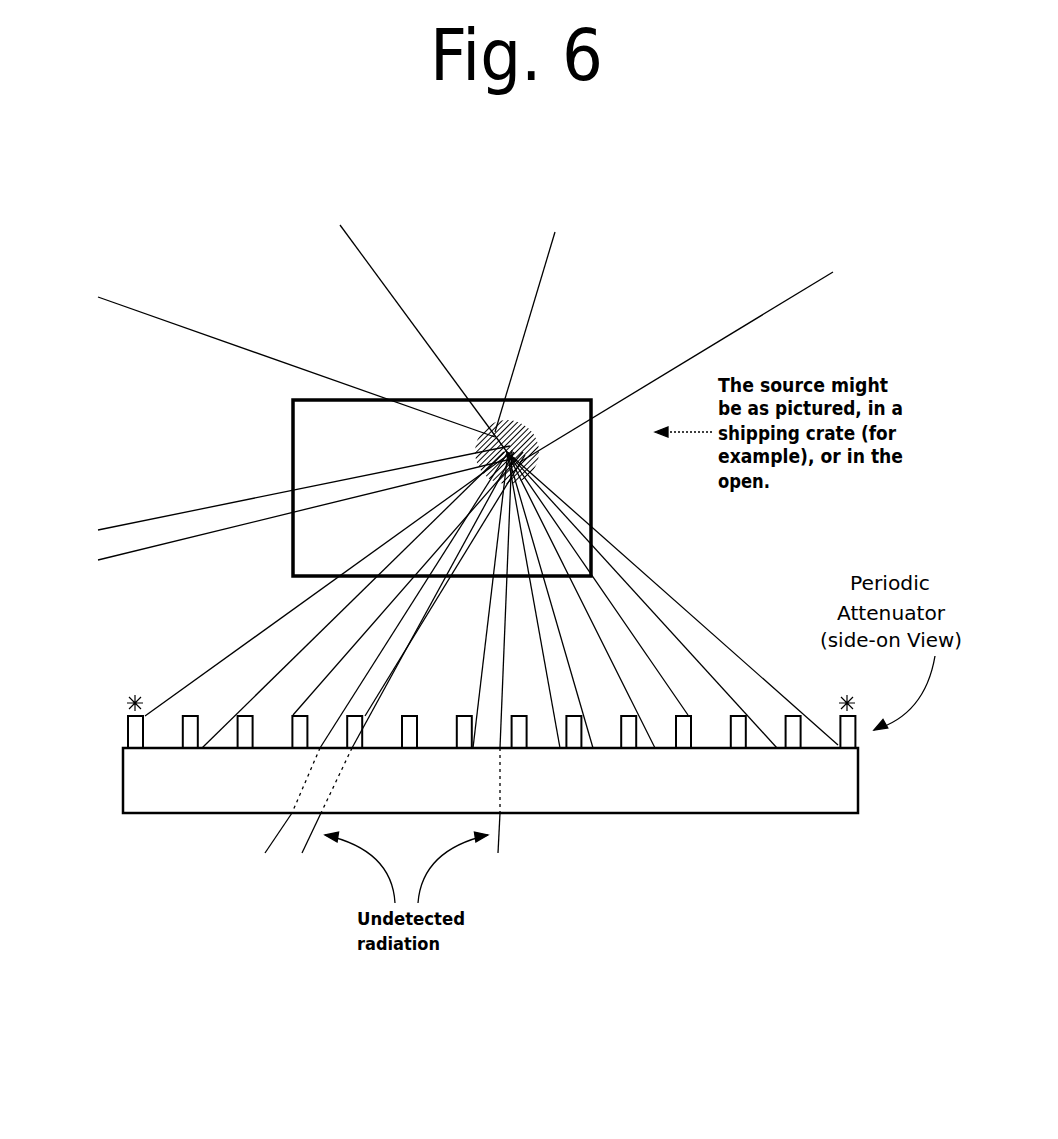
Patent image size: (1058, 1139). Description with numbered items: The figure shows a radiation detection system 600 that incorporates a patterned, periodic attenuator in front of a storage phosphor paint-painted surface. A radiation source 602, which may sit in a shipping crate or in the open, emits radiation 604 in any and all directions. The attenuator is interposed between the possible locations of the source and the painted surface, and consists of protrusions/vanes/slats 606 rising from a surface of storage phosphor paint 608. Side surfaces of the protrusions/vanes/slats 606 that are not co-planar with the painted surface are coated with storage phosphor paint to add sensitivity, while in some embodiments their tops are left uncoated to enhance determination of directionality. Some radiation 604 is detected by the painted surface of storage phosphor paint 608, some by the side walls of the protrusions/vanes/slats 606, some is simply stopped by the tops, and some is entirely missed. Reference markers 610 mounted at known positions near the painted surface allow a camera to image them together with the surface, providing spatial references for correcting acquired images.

The radiation detection system 600 is at (170, 217).
The radiation source 602 is at (538, 432).
The radiation 604 is at (700, 595).
The protrusions/vanes/slats 606 is at (243, 708).
The painted surface of storage phosphor paint 608 is at (647, 820).
The reference markers 610 is at (135, 692).